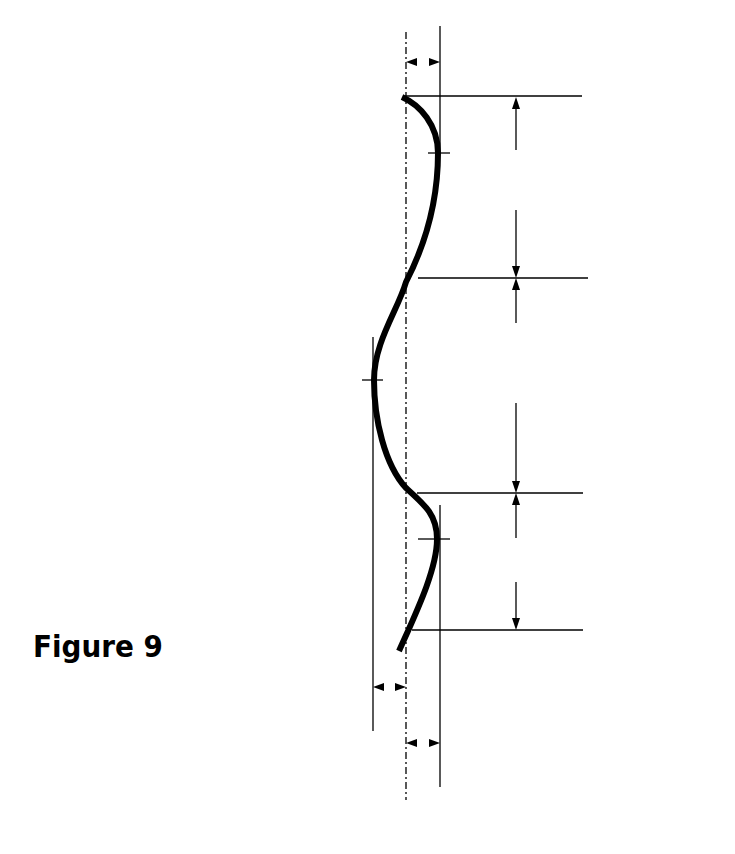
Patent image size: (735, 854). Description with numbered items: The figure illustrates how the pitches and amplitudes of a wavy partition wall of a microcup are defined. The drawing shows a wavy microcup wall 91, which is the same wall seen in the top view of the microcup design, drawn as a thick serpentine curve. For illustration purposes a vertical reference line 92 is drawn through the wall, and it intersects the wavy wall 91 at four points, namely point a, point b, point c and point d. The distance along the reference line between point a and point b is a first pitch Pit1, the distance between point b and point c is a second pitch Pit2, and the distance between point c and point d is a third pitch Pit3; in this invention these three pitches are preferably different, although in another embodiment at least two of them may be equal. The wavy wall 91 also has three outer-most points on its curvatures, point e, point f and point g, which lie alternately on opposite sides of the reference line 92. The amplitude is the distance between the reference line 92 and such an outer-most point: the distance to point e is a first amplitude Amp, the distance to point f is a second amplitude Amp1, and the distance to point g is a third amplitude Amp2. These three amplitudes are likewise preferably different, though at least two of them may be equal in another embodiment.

The wavy microcup wall 91 is at (418, 198).
The vertical reference line 92 is at (410, 425).
The point a is at (478, 102).
The point b is at (481, 273).
The point c is at (479, 488).
The point d is at (479, 623).
The point e is at (453, 152).
The point f is at (360, 380).
The point g is at (449, 542).
The first amplitude Amp is at (450, 39).
The first pitch Pit1 is at (537, 187).
The second pitch Pit2 is at (538, 385).
The third pitch Pit3 is at (538, 561).
The second amplitude Amp1 is at (363, 665).
The third amplitude Amp2 is at (450, 722).